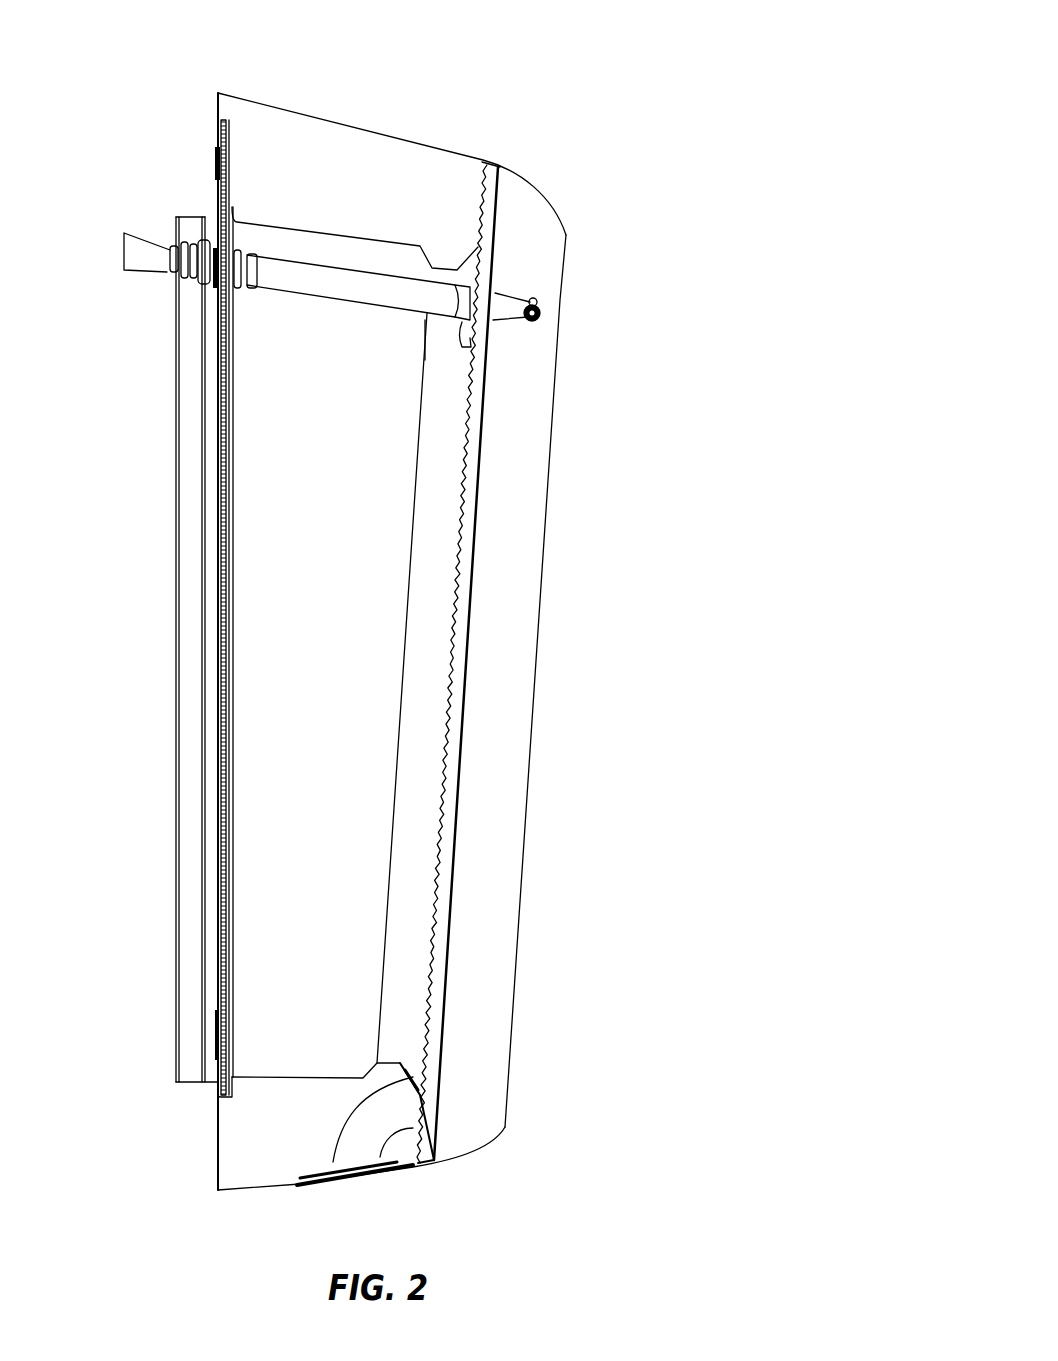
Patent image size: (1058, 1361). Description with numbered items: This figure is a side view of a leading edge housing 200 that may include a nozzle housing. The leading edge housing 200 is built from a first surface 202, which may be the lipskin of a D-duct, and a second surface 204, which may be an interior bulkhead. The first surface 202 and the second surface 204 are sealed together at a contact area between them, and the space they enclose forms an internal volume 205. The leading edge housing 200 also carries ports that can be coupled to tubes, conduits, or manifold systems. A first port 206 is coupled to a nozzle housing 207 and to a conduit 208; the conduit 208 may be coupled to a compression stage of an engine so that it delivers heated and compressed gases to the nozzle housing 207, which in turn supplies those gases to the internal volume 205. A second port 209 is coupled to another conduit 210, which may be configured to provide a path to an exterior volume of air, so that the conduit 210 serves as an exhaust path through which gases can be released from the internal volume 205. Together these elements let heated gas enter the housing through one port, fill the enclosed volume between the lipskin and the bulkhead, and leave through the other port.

The leading edge housing 200 is at (692, 59).
The first surface 202 is at (452, 162).
The second surface 204 is at (432, 880).
The internal volume 205 is at (508, 654).
The first port 206 is at (495, 290).
The nozzle housing 207 is at (543, 305).
The conduit 208 is at (308, 280).
The second port 209 is at (435, 1113).
The conduit 210 is at (348, 1142).